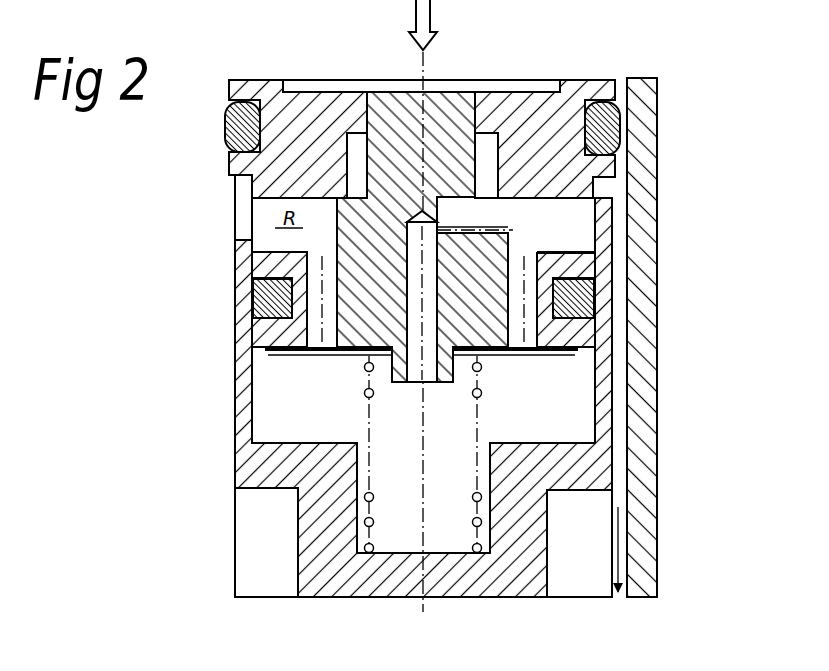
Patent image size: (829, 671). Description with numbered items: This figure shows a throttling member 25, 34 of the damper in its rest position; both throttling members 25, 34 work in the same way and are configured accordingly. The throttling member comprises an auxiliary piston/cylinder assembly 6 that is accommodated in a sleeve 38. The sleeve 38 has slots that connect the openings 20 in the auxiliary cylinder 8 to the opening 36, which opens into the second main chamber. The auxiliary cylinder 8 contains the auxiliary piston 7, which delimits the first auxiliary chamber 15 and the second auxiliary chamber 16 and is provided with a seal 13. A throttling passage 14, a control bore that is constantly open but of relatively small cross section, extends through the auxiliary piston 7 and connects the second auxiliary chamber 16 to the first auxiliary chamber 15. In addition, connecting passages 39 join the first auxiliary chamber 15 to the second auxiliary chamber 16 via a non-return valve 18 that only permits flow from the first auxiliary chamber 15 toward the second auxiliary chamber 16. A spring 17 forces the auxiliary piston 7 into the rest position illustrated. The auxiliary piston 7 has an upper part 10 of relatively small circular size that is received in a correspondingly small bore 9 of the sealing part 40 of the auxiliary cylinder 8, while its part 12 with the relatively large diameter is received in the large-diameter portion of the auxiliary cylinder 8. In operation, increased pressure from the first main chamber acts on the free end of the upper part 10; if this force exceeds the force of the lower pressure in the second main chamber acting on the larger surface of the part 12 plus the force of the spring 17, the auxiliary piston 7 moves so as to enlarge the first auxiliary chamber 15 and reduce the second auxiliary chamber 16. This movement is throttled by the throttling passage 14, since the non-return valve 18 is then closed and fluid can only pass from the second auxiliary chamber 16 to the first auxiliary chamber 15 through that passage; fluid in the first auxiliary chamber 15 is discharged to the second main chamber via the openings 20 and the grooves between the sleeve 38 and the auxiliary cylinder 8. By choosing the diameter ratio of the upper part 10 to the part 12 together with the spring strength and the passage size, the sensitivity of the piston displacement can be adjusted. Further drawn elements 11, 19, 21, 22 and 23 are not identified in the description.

The auxiliary piston/cylinder assembly 6 is at (678, 398).
The auxiliary piston 7 is at (408, 78).
The auxiliary cylinder 8 is at (602, 432).
The small bore 9 is at (488, 160).
The upper part 10 is at (598, 155).
The lower housing 11 is at (560, 398).
The part with relatively large diameter 12 is at (565, 266).
The seal 13 is at (582, 298).
The throttling passage 14 is at (428, 380).
The first auxiliary chamber 15 is at (547, 220).
The second auxiliary chamber 16 is at (545, 395).
The spring 17 is at (478, 550).
The non-return valve 18 is at (508, 370).
The diaphragm 19 is at (553, 356).
The openings 20 is at (600, 226).
The cover plate 21 is at (540, 130).
The piston upper part 22 is at (447, 140).
The piston 23 is at (343, 242).
The throttling member 25 is at (166, 386).
The throttling member 34 is at (205, 438).
The opening 36 is at (618, 637).
The sleeve 38 is at (645, 540).
The connecting passages 39 is at (545, 343).
The sealing part 40 is at (317, 80).